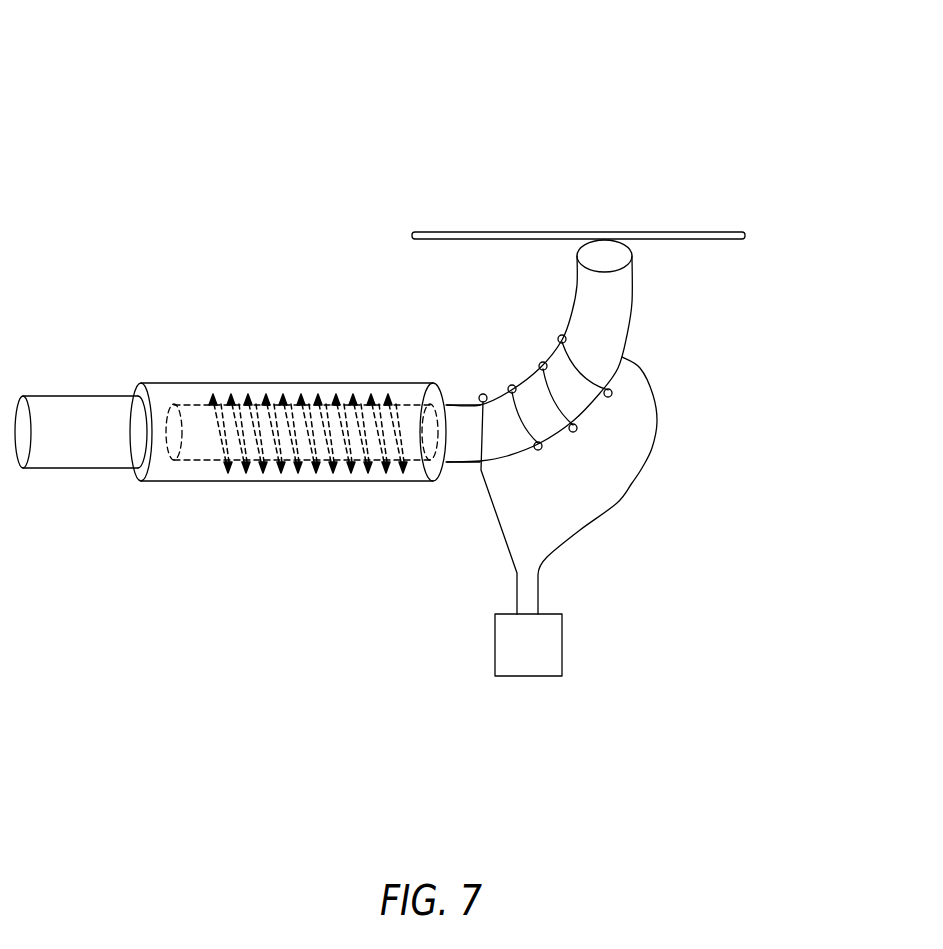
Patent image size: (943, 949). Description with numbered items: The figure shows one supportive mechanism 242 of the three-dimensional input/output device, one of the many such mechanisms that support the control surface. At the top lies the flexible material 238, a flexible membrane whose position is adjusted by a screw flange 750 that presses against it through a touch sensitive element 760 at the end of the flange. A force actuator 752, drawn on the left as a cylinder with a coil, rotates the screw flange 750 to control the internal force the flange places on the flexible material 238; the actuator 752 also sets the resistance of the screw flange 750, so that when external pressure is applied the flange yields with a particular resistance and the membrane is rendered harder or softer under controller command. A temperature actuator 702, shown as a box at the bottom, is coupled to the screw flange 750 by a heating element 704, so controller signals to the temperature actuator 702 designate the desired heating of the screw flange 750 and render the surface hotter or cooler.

The supportive mechanism 242 is at (197, 123).
The flexible material 238 is at (645, 232).
The actuator 752 is at (450, 367).
The touch sensitive element 760 is at (633, 259).
The screw flange 750 is at (628, 357).
The heating element 704 is at (483, 500).
The temperature actuator 702 is at (562, 642).